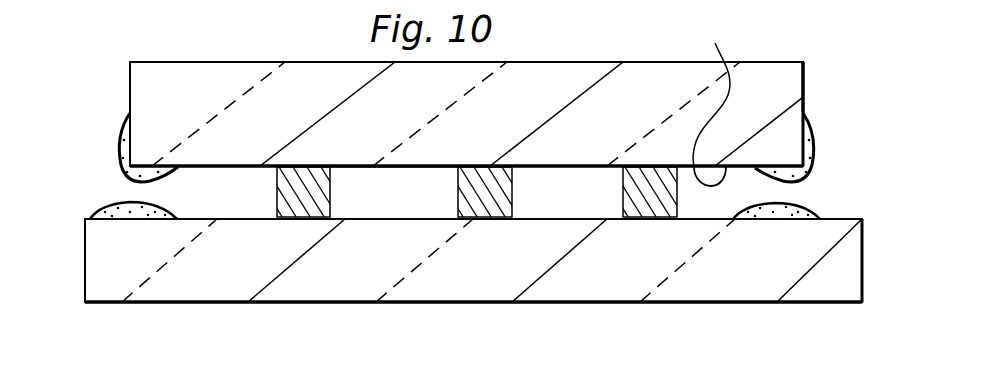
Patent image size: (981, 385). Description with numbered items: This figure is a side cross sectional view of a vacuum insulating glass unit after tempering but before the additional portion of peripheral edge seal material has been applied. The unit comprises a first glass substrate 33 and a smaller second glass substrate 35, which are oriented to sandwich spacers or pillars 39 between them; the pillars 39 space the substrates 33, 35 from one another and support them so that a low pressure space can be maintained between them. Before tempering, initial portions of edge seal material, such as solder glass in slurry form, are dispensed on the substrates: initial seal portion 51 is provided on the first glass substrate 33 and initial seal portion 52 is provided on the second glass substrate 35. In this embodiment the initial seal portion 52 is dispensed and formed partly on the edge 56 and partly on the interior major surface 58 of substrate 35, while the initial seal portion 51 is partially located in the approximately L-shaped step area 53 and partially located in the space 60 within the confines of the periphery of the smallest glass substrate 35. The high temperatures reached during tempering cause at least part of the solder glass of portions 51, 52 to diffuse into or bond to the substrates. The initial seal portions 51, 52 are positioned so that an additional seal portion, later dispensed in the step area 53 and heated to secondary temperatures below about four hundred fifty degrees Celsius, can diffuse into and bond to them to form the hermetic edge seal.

The first glass substrate 33 is at (303, 273).
The second glass substrate 35 is at (537, 68).
The spacers/pillars 39 is at (298, 203).
The initial seal portion 51 is at (111, 204).
The initial seal portion 52 is at (118, 153).
The step area 53 is at (838, 110).
The edge 56 is at (130, 88).
The interior major surface 58 is at (710, 104).
The space 60 is at (383, 197).